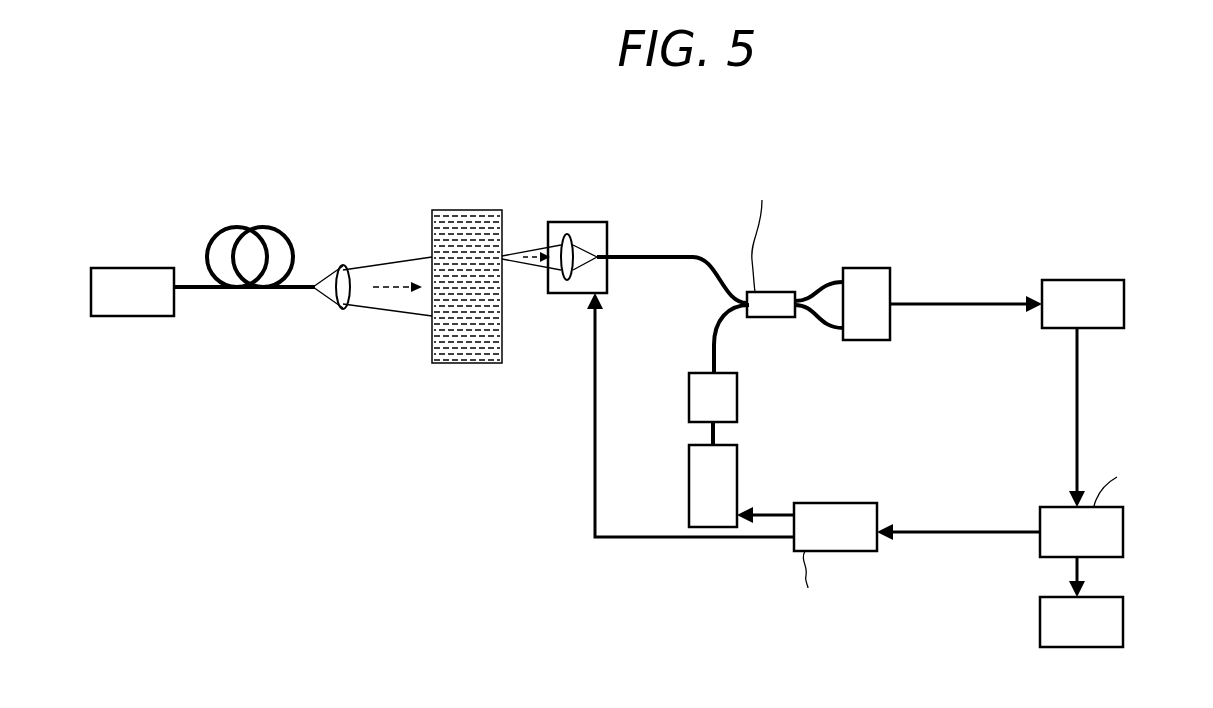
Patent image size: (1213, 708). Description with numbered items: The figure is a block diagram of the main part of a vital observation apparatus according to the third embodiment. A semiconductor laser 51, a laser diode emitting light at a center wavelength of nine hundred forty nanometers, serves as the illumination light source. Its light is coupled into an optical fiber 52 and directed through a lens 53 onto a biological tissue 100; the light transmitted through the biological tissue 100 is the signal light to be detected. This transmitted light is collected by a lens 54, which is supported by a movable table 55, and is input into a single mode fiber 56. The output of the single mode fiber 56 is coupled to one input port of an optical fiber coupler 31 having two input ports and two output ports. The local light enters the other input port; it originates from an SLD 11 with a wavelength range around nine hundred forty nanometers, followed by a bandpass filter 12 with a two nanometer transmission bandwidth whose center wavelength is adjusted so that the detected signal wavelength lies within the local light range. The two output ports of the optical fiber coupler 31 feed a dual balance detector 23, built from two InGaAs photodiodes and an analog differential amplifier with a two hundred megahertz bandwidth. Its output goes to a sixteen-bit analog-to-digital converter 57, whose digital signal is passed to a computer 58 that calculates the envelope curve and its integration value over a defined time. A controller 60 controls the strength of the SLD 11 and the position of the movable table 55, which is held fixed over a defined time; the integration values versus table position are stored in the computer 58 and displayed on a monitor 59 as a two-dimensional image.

The semiconductor laser 51 is at (118, 268).
The optical fiber 52 is at (226, 230).
The lens 53 is at (343, 266).
The biological tissue 100 is at (446, 218).
The lens 54 is at (567, 281).
The movable table 55 is at (600, 222).
The single mode fiber 56 is at (660, 256).
The optical fiber coupler 31 is at (764, 292).
The dual balance detector 23 is at (857, 268).
The analog-to-digital converter 57 is at (1067, 281).
The bandpass filter 12 is at (737, 407).
The SLD 11 is at (737, 466).
The controller 60 is at (820, 503).
The computer 58 is at (1123, 512).
The monitor 59 is at (1123, 607).